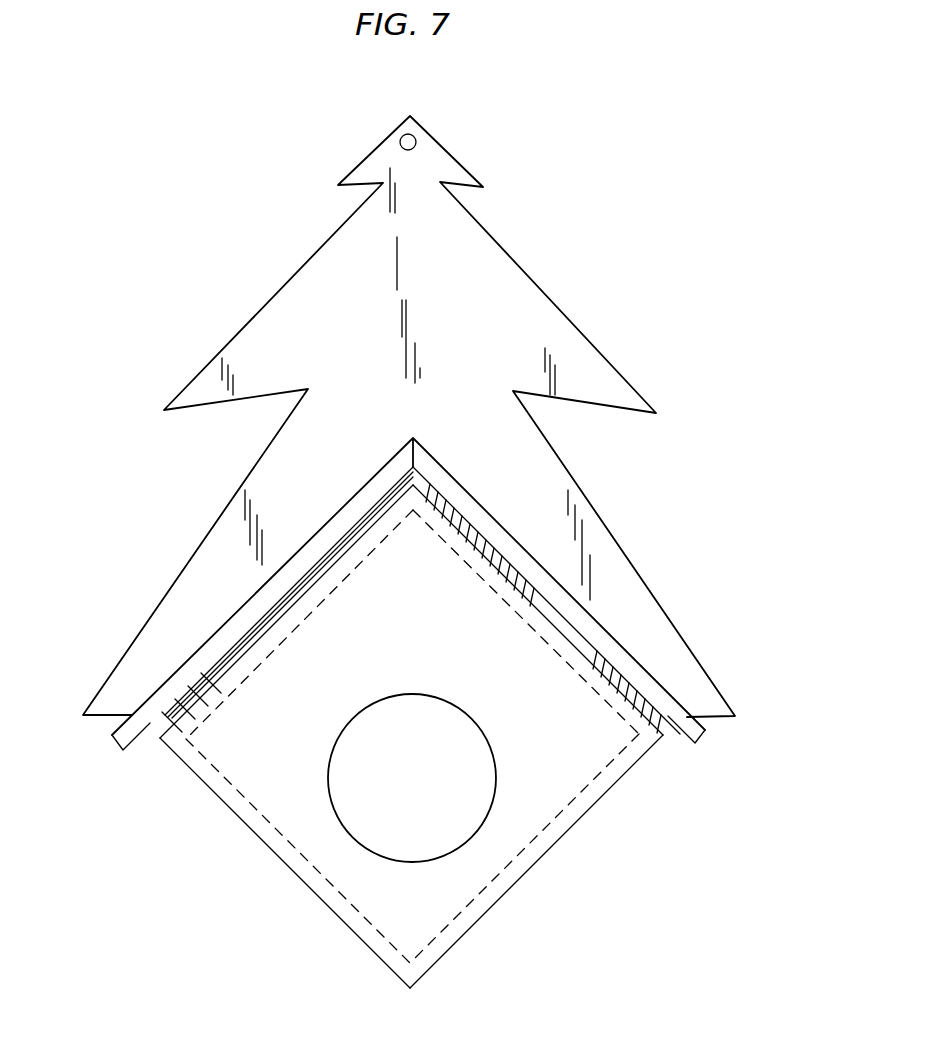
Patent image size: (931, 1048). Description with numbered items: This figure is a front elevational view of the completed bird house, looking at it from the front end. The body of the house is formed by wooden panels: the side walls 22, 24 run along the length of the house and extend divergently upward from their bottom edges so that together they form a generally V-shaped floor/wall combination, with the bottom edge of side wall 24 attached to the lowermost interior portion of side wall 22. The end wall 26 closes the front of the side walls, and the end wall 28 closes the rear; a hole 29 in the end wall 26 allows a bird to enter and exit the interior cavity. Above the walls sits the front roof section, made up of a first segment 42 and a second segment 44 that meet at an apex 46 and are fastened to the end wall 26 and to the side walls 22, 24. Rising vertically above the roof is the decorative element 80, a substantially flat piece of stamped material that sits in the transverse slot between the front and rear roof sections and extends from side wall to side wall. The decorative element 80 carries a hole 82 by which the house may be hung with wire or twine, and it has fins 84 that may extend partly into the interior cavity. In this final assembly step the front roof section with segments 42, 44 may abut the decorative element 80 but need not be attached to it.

The side wall 22 is at (222, 790).
The side wall 24 is at (604, 795).
The end wall 26 is at (548, 830).
The end wall 28 is at (425, 794).
The hole 29 is at (368, 848).
The first segment 42 is at (120, 745).
The second segment 44 is at (707, 736).
The apex 46 is at (413, 437).
The decorative element 80 is at (550, 300).
The hole 82 is at (420, 144).
The fins 84 is at (180, 700).